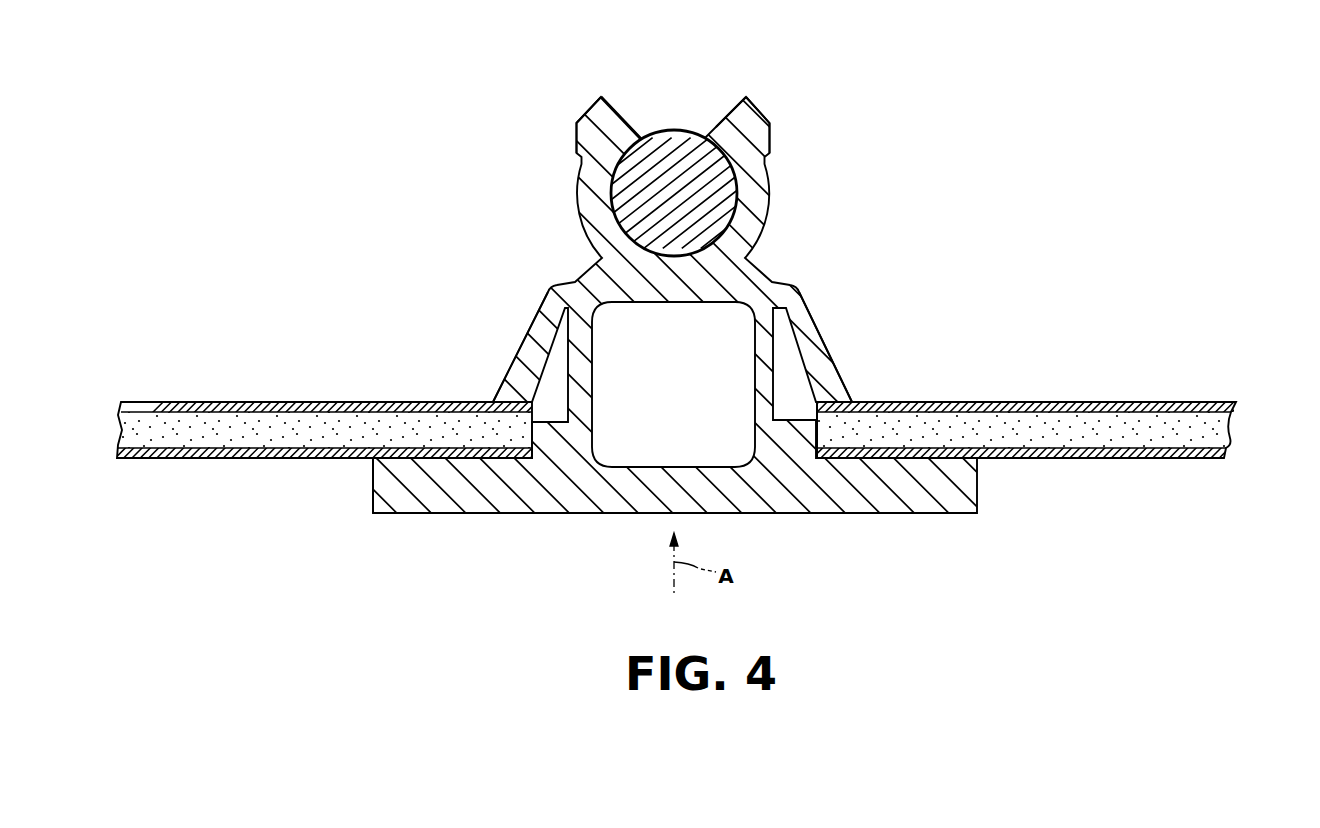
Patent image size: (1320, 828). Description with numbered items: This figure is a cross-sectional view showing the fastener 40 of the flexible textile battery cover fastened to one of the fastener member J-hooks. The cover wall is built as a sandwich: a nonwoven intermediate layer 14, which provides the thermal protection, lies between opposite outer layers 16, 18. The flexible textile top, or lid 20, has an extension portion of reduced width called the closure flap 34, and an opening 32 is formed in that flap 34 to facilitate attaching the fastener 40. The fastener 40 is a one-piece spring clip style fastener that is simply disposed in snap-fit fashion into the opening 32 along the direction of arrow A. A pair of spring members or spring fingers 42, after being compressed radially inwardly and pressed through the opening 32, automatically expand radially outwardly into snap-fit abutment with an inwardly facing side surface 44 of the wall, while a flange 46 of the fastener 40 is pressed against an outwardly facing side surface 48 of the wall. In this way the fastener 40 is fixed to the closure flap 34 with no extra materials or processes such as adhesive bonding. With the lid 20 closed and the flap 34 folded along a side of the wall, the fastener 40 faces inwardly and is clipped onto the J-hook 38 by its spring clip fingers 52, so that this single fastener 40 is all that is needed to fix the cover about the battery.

The nonwoven intermediate layer 14 is at (1228, 428).
The outer layer 16 is at (1233, 407).
The outer layer 18 is at (1227, 456).
The lid 20 is at (1103, 459).
The opening 32 is at (817, 437).
The closure flap 34 is at (1035, 459).
The J-hook 38 is at (672, 131).
The fastener 40 is at (498, 514).
The spring fingers 42 is at (517, 350).
The inwardly facing side surface 44 is at (227, 402).
The flange 46 is at (373, 483).
The outwardly facing side surface 48 is at (178, 459).
The spring clip fingers 52 is at (576, 165).